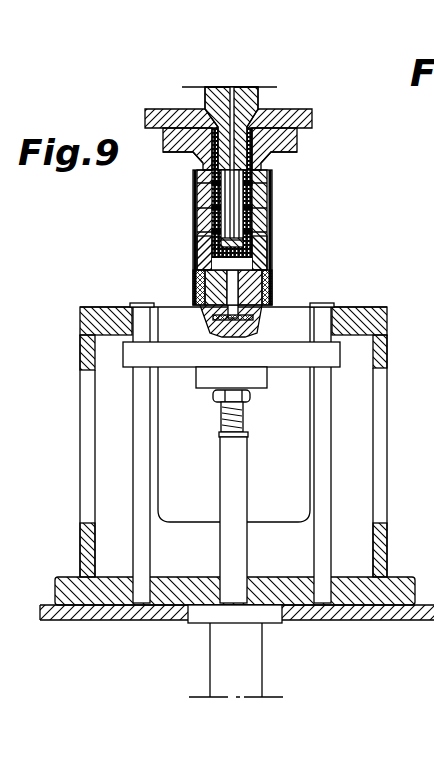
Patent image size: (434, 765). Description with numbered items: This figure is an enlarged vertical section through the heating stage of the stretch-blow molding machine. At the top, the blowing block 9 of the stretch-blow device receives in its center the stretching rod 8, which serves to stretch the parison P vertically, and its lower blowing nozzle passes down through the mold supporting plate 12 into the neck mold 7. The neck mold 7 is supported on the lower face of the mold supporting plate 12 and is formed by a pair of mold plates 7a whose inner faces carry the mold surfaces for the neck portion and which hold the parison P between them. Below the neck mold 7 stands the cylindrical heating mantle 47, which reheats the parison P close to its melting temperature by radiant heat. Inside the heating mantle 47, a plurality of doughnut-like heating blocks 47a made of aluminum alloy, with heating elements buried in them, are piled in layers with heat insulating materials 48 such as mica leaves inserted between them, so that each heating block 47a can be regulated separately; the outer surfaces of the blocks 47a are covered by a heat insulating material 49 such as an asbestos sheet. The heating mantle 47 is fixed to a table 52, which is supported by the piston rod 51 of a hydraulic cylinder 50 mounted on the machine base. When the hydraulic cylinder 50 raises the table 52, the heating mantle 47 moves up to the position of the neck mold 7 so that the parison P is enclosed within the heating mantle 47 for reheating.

The blowing block 9 is at (240, 98).
The mold supporting plate 12 is at (292, 120).
The neck mold 7 is at (201, 163).
The mold plates 7a is at (180, 138).
The stretching rod 8 is at (231, 201).
The heat insulating materials 48 is at (196, 200).
The parison P is at (250, 236).
The heating mantle 47 is at (276, 254).
The heating blocks 47a is at (196, 240).
The heat insulating material 49 is at (196, 276).
The table 52 is at (180, 358).
The piston rod 51 is at (240, 460).
The hydraulic cylinder 50 is at (250, 660).